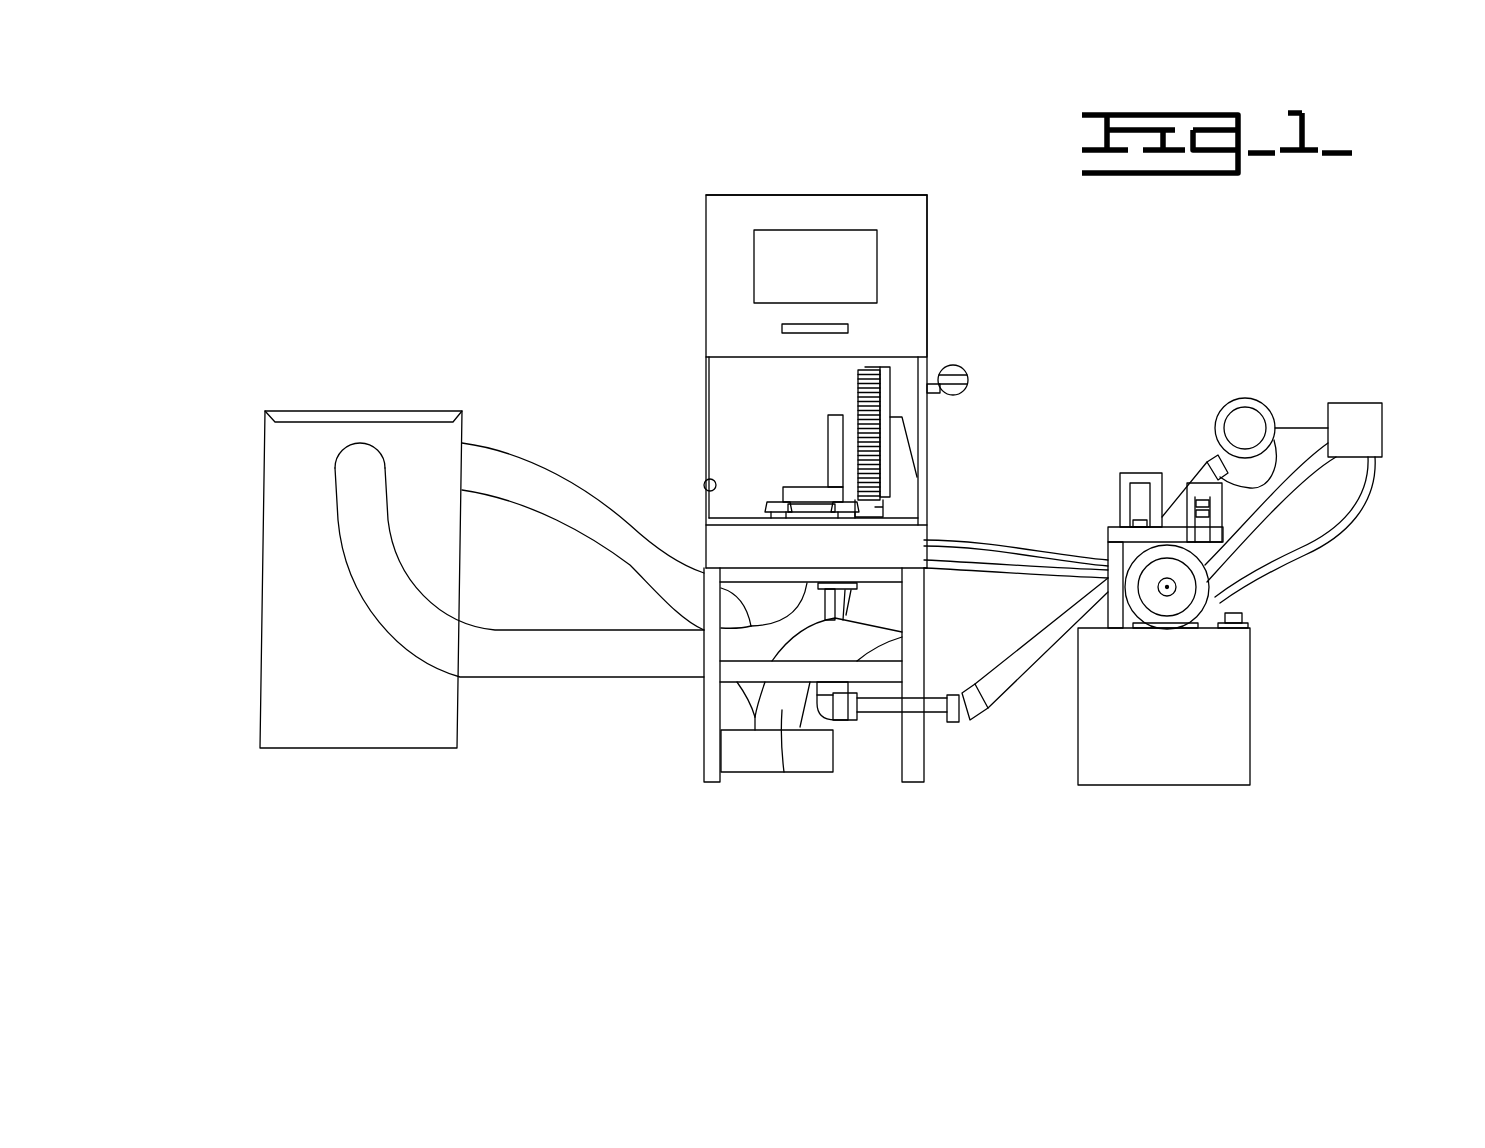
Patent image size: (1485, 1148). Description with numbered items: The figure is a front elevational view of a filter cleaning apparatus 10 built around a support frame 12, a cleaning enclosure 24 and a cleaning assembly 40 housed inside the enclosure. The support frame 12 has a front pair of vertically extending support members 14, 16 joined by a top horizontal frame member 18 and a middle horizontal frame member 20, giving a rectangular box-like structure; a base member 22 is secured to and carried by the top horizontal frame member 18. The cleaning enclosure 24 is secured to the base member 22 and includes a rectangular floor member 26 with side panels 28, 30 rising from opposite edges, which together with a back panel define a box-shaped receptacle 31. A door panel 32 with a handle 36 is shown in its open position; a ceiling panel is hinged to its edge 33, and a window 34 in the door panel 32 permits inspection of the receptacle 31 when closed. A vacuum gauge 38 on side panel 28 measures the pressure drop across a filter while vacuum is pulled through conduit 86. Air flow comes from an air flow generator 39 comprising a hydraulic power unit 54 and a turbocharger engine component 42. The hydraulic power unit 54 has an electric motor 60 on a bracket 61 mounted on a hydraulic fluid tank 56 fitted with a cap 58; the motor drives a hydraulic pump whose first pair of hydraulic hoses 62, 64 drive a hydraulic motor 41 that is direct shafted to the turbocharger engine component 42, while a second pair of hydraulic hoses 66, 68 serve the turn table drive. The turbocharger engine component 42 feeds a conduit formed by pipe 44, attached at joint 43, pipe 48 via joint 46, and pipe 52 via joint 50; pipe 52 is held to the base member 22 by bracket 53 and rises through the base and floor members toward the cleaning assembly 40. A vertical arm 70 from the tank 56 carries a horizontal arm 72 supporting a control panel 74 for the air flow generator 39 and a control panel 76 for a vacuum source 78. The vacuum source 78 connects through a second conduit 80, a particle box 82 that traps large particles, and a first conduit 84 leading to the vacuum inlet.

The filter cleaning apparatus 10 is at (505, 220).
The support frame 12 is at (645, 718).
The vertically extending support member 14 is at (704, 743).
The vertically extending support member 16 is at (910, 770).
The top horizontal frame member 18 is at (700, 573).
The middle horizontal frame member 20 is at (855, 672).
The base member 22 is at (903, 538).
The cleaning enclosure 24 is at (978, 437).
The floor member 26 is at (918, 527).
The side panel 28 is at (945, 440).
The side panel 30 is at (704, 400).
The receptacle 31 is at (704, 486).
The door panel 32 is at (902, 215).
The edge 33 is at (882, 195).
The window 34 is at (774, 248).
The handle 36 is at (848, 329).
The vacuum gauge 38 is at (962, 368).
The air flow generator 39 is at (1333, 293).
The cleaning assembly 40 is at (745, 408).
The hydraulic motor 41 is at (1360, 403).
The turbocharger engine component 42 is at (1262, 400).
The joint 43 is at (1257, 445).
The pipe 44 is at (1048, 625).
The joint 46 is at (972, 722).
The pipe 48 is at (882, 722).
The joint 50 is at (848, 722).
The pipe 52 is at (845, 605).
The bracket 53 is at (852, 589).
The hydraulic power unit 54 is at (1245, 830).
The hydraulic fluid tank 56 is at (1250, 708).
The cap 58 is at (1248, 618).
The electric motor 60 is at (1212, 600).
The bracket 61 is at (1200, 620).
The hydraulic hose 62 is at (1285, 484).
The hydraulic hose 64 is at (1358, 500).
The hydraulic hose 66 is at (1030, 548).
The hydraulic hose 68 is at (1032, 562).
The vertical arm 70 is at (1095, 612).
The horizontal arm 72 is at (1165, 530).
The control panel 74 is at (1122, 473).
The control panel 76 is at (1188, 475).
The vacuum source 78 is at (265, 411).
The second conduit 80 is at (550, 462).
The particle box 82 is at (760, 772).
The first conduit 84 is at (785, 772).
The conduit 86 is at (532, 698).